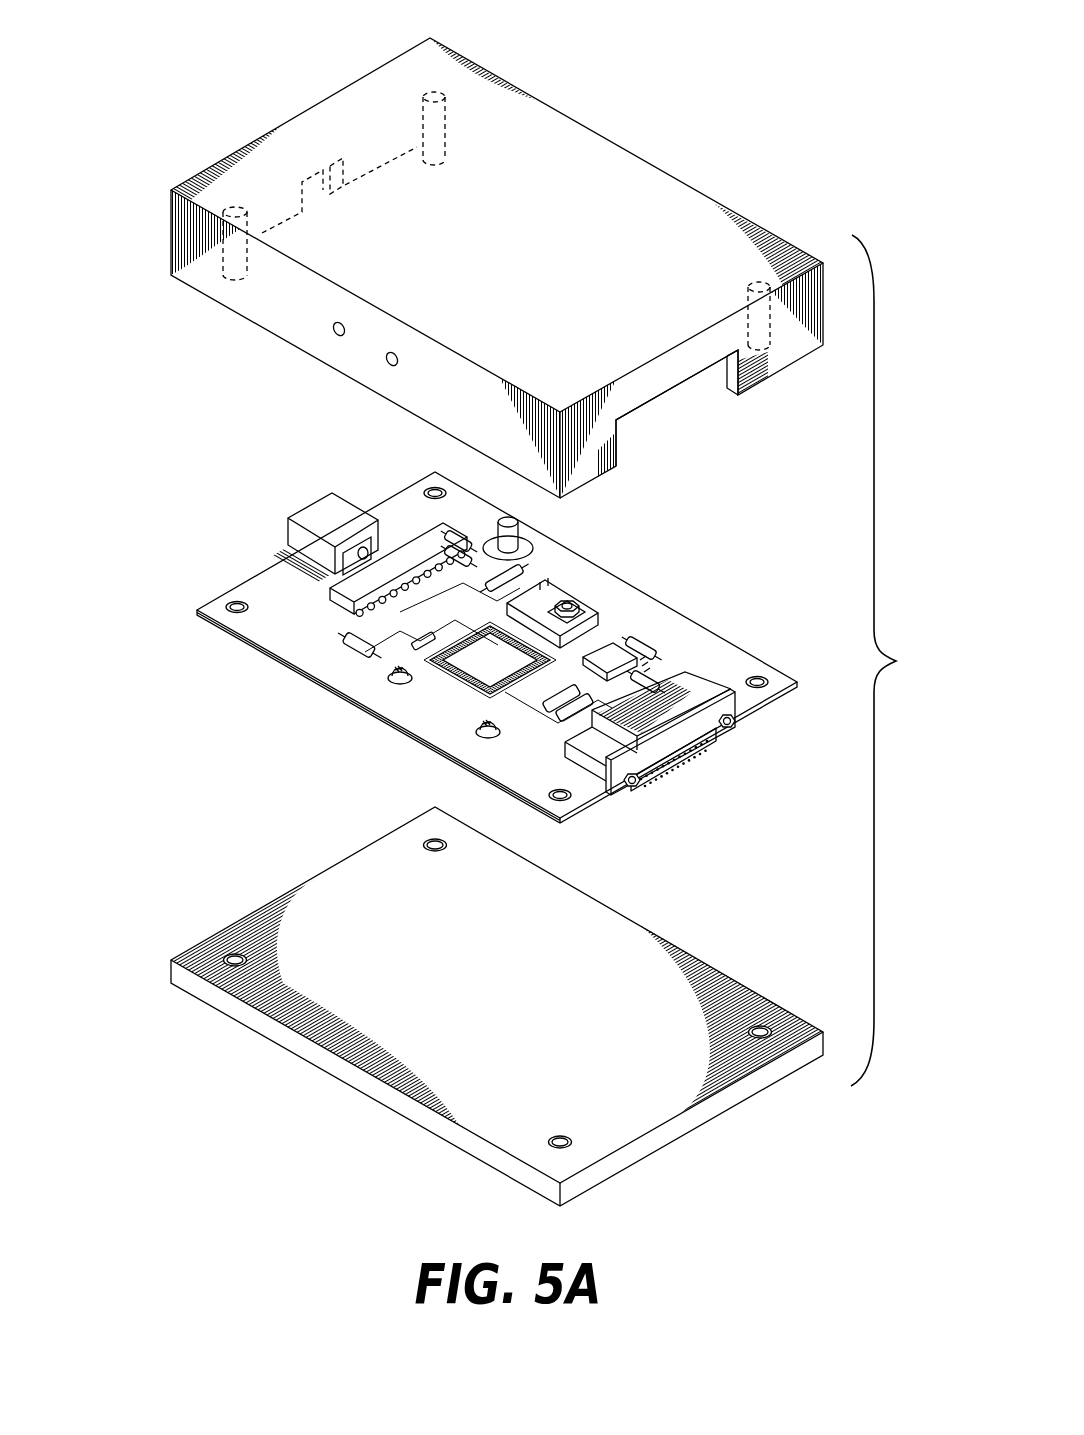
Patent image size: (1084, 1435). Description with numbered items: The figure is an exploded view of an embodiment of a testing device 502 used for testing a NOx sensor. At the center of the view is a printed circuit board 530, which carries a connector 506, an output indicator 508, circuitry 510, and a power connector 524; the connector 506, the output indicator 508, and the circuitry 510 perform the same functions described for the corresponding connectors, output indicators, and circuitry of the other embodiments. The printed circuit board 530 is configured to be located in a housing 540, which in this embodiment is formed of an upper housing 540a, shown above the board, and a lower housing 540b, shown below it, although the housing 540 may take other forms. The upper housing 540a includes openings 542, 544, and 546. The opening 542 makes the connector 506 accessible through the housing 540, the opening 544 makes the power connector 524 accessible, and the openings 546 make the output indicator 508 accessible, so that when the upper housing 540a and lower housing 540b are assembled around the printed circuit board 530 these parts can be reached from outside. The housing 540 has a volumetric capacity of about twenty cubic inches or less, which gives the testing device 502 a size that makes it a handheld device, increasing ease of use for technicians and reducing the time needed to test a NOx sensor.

The testing device 502 is at (776, 118).
The connector 506 is at (666, 698).
The output indicator 508 is at (392, 674).
The circuitry 510 is at (517, 635).
The power connector 524 is at (322, 508).
The printed circuit board 530 is at (785, 668).
The housing 540 is at (460, 622).
The upper housing 540a is at (480, 268).
The lower housing 540b is at (243, 930).
The opening 542 is at (667, 420).
The opening 544 is at (322, 168).
The opening 546 is at (335, 334).